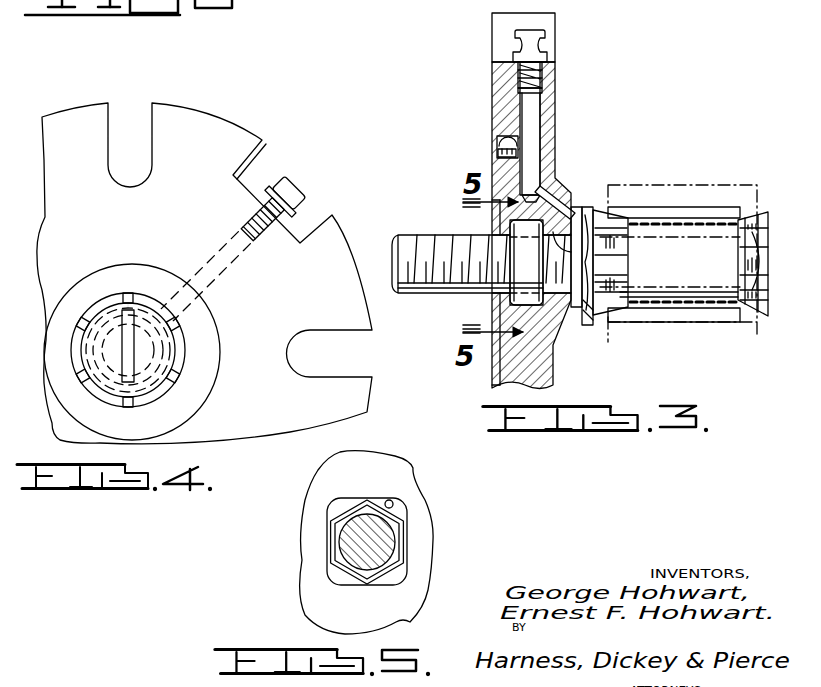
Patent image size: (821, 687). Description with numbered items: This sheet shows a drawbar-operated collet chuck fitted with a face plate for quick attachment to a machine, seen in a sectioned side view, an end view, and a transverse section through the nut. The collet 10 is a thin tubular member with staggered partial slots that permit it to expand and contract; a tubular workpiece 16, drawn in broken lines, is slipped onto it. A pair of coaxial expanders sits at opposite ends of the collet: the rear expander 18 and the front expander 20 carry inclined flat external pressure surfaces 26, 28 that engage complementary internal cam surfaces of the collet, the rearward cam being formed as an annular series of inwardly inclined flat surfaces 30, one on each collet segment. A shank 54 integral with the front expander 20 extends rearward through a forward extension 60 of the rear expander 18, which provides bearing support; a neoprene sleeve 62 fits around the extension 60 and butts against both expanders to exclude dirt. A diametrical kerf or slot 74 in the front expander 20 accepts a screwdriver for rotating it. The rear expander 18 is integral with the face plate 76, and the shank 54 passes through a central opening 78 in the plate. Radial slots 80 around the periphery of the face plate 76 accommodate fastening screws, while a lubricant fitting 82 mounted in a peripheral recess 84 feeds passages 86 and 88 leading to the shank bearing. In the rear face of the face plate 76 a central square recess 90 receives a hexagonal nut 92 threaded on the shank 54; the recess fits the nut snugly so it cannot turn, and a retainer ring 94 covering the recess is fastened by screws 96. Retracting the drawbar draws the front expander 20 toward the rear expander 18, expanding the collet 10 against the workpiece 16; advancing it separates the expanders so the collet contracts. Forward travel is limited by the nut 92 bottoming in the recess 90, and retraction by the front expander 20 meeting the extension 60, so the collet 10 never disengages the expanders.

In FIG. 4, the collet 10 is at (150, 293).
In FIG. 3, the collet 10 is at (671, 205).
In FIG. 3, the tubular workpiece 16 is at (651, 186).
In FIG. 3, the rear expander 18 is at (594, 207).
In FIG. 4, the front expander 20 is at (153, 315).
In FIG. 3, the front expander 20 is at (746, 245).
In FIG. 3, the pressure surface 26 is at (635, 281).
In FIG. 4, the pressure surface 28 is at (182, 395).
In FIG. 3, the pressure surface 28 is at (746, 263).
In FIG. 4, the inwardly inclined flat surfaces 30 is at (167, 355).
In FIG. 3, the shank 54 is at (452, 292).
In FIG. 5, the shank 54 is at (358, 537).
In FIG. 3, the forward extension 60 is at (683, 231).
In FIG. 3, the sleeve 62 is at (736, 220).
In FIG. 4, the diametrical kerf or slot 74 is at (130, 339).
In FIG. 4, the face plate 76 is at (336, 234).
In FIG. 3, the face plate 76 is at (553, 109).
In FIG. 5, the face plate 76 is at (413, 523).
In FIG. 3, the central opening 78 is at (610, 262).
In FIG. 4, the radial slots 80 is at (113, 110).
In FIG. 4, the lubricant fitting 82 is at (293, 201).
In FIG. 4, the peripheral recess 84 is at (250, 170).
In FIG. 3, the passage 86 is at (534, 150).
In FIG. 3, the passage 88 is at (563, 198).
In FIG. 3, the central square recess 90 is at (503, 303).
In FIG. 5, the central square recess 90 is at (393, 505).
In FIG. 3, the nut 92 is at (500, 219).
In FIG. 5, the nut 92 is at (400, 549).
In FIG. 3, the retainer ring 94 is at (505, 155).
In FIG. 3, the screws 96 is at (511, 144).